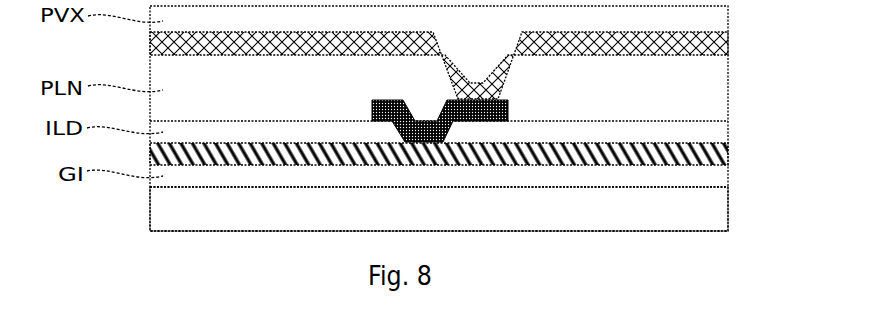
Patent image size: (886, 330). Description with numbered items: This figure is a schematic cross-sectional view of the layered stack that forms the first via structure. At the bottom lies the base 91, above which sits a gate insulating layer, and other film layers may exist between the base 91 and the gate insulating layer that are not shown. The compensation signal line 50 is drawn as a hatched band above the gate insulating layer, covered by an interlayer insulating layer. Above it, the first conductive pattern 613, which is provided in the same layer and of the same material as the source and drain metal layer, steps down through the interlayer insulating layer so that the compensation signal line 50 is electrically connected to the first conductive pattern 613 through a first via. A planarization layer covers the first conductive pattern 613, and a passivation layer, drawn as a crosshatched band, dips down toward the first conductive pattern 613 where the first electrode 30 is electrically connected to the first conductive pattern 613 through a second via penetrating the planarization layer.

The first electrode 30 is at (729, 36).
The first conductive pattern 613 is at (509, 110).
The compensation signal line 50 is at (729, 148).
The base 91 is at (718, 208).